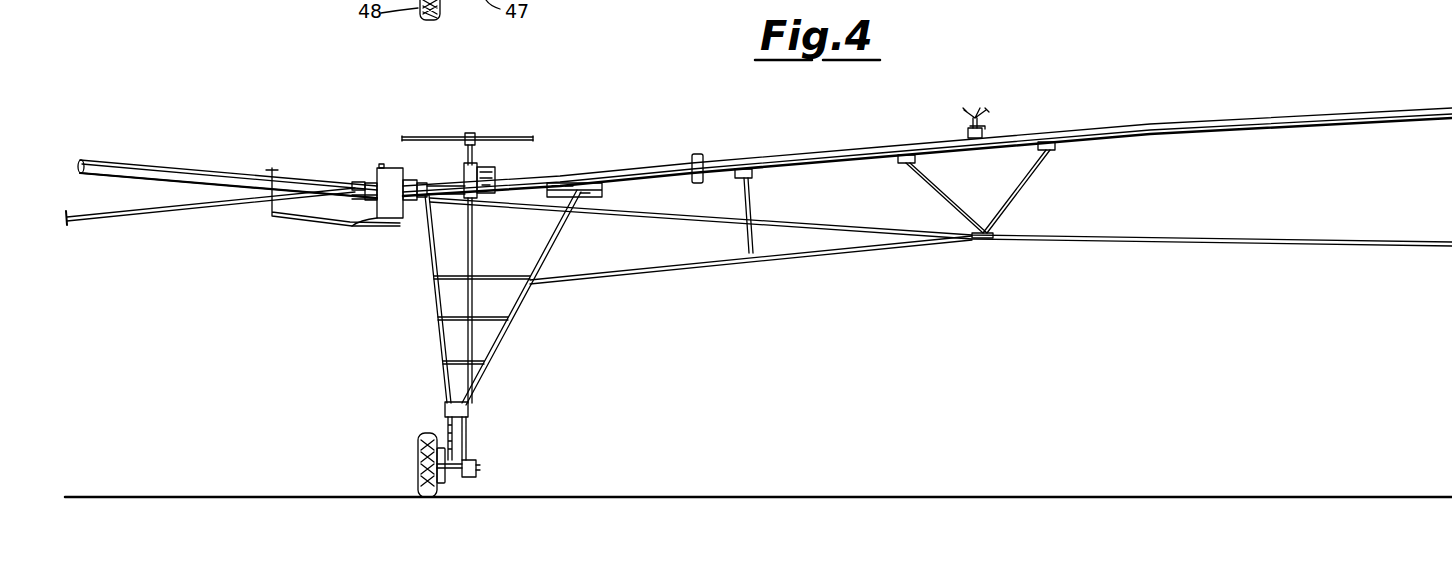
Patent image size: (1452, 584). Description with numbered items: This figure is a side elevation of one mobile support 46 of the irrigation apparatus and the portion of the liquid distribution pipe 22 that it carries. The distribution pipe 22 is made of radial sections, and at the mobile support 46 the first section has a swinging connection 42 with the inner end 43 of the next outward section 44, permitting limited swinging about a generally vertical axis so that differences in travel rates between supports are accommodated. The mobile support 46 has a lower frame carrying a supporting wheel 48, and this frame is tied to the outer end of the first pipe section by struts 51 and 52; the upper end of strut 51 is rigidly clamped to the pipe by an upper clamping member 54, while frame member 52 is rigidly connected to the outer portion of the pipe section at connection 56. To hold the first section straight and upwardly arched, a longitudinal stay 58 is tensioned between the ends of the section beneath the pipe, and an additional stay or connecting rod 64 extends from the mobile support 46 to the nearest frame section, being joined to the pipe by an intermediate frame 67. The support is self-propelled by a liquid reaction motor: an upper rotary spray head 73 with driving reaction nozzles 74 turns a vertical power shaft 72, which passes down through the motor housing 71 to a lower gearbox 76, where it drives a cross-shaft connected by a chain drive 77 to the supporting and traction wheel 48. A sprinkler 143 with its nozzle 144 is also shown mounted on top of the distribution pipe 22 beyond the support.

The liquid distribution pipe 22 is at (187, 194).
The swinging connection 42 is at (378, 164).
The inner end of the next outward section 43 is at (330, 186).
The next outward section of the distribution pipe 44 is at (128, 167).
The mobile support 46 is at (385, 362).
The supporting wheel 48 is at (422, 457).
The strut 51 is at (437, 294).
The strut 52 is at (522, 303).
The upper clamping member 54 is at (410, 181).
The connection of frame members to pipe section 56 is at (603, 191).
The longitudinal stay 58 is at (1163, 242).
The stay or connecting rod 64 is at (700, 262).
The intermediate frame 67 is at (749, 206).
The motor housing 71 is at (476, 213).
The vertical power shaft 72 is at (473, 255).
The upper rotary spray head 73 is at (479, 132).
The driving reaction nozzles 74 is at (530, 140).
The lower gearbox 76 is at (477, 463).
The chain drive 77 is at (446, 481).
The sprinkler 143 is at (972, 112).
The nozzle 144 is at (983, 135).